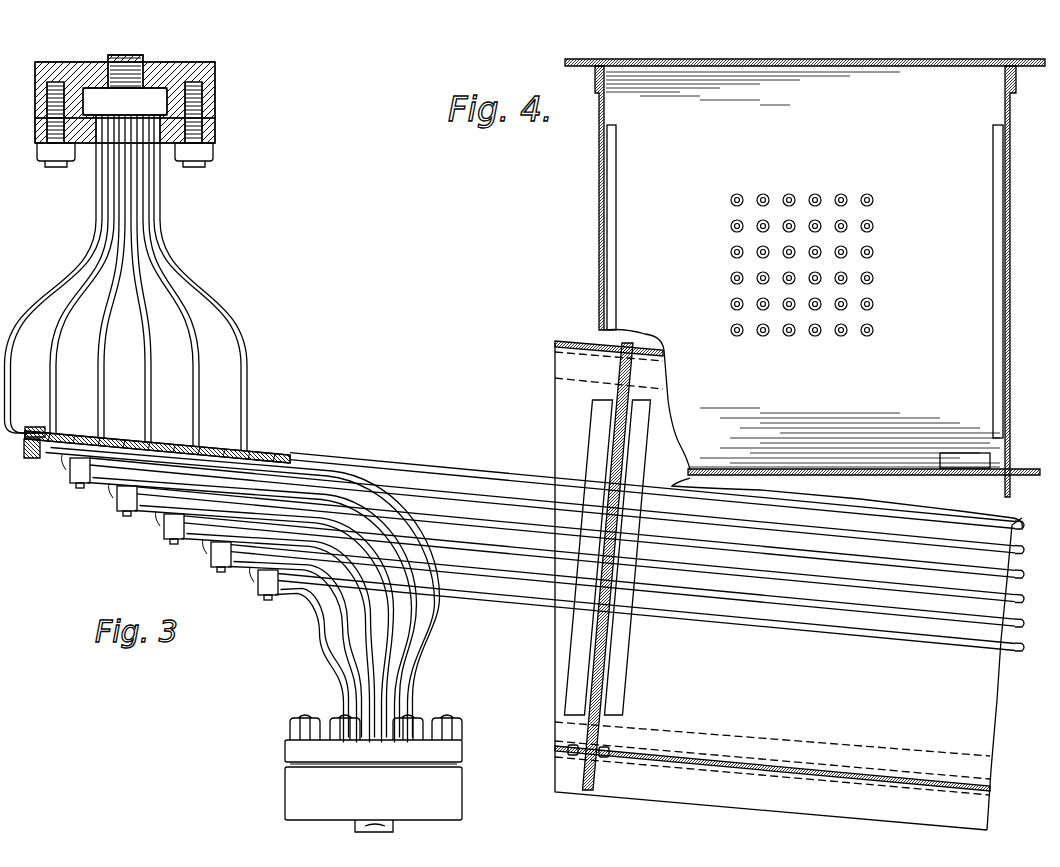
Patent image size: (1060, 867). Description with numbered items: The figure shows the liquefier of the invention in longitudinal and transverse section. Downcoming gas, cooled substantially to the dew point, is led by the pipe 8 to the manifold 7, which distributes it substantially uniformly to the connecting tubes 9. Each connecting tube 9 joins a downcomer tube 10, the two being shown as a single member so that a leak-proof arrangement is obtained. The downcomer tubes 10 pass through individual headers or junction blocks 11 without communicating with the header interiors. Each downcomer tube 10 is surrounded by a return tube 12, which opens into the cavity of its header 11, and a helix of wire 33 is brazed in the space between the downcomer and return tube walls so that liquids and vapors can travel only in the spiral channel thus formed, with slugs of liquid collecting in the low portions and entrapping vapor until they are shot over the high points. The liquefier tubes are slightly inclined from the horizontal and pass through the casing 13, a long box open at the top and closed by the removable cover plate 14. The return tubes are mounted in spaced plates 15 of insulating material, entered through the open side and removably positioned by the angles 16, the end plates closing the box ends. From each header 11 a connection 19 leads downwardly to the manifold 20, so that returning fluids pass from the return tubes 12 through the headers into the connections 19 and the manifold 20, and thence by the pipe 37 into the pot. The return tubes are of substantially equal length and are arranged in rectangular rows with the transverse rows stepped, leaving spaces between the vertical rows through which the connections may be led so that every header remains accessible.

In FIG. 3, the manifold 7 is at (215, 70).
In FIG. 3, the pipe 8 is at (105, 90).
In FIG. 3, the connecting tubes 9 is at (195, 373).
In FIG. 3, the downcomer tube 10 is at (291, 452).
In FIG. 3, the helix of wire 33 is at (252, 452).
In FIG. 3, the header 11 is at (40, 431).
In FIG. 3, the return tube 12 is at (426, 500).
In FIG. 3, the connection 19 is at (410, 652).
In FIG. 3, the manifold 20 is at (440, 800).
In FIG. 3, the pipe 37 is at (392, 823).
In FIG. 3, the casing 13 is at (788, 586).
In FIG. 4, the casing 13 is at (796, 281).
In FIG. 3, the cover plate 14 is at (952, 784).
In FIG. 4, the cover plate 14 is at (878, 68).
In FIG. 3, the plates 15 is at (612, 672).
In FIG. 4, the plates 15 is at (802, 293).
In FIG. 3, the angles 16 is at (586, 735).
In FIG. 4, the angles 16 is at (1003, 395).